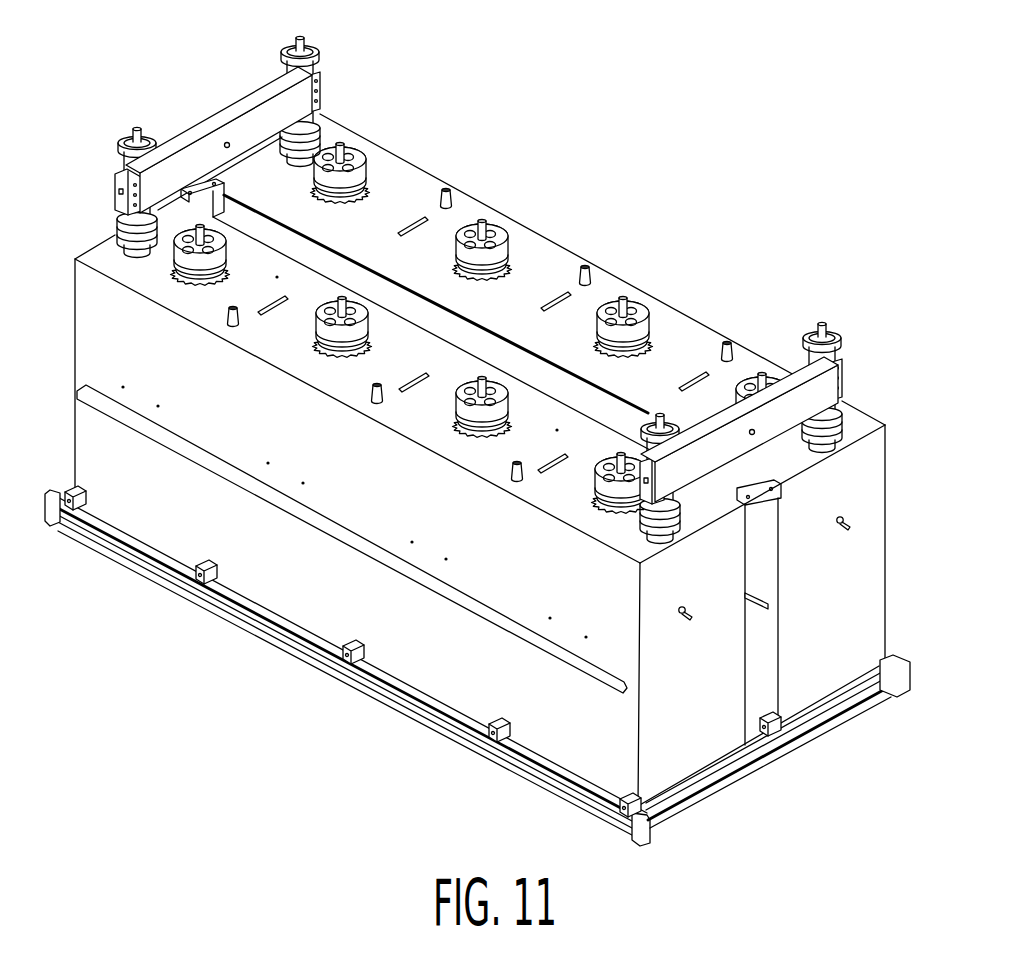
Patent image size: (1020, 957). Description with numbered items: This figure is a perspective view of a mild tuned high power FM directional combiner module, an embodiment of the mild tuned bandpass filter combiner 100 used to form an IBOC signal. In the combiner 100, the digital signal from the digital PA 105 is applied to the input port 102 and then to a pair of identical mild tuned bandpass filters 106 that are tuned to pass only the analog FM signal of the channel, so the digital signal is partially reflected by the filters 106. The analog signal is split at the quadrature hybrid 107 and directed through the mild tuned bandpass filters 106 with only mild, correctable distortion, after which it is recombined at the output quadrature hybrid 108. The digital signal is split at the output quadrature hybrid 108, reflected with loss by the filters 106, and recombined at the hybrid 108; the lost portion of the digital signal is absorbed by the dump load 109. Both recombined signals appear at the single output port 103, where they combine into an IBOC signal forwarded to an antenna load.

The mild tuned bandpass filter (MTF) combiner 100 is at (815, 171).
The input port 102 is at (120, 145).
The output port 103 is at (832, 330).
The digital PA 105 is at (822, 462).
The mild tuned bandpass filters 106 is at (760, 377).
The quadrature hybrid 107 is at (318, 100).
The output quadrature hybrid 108 is at (843, 377).
The dump load 109 is at (312, 48).